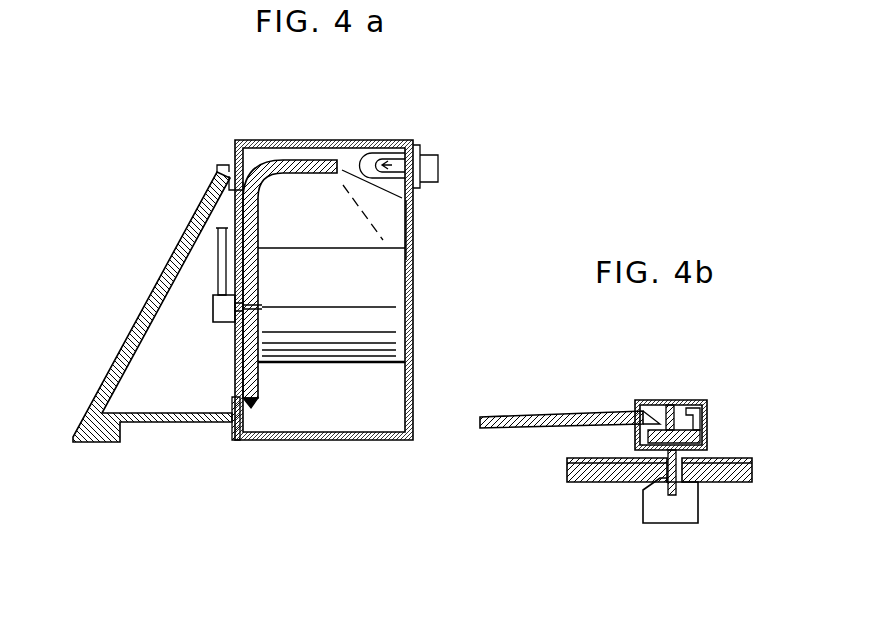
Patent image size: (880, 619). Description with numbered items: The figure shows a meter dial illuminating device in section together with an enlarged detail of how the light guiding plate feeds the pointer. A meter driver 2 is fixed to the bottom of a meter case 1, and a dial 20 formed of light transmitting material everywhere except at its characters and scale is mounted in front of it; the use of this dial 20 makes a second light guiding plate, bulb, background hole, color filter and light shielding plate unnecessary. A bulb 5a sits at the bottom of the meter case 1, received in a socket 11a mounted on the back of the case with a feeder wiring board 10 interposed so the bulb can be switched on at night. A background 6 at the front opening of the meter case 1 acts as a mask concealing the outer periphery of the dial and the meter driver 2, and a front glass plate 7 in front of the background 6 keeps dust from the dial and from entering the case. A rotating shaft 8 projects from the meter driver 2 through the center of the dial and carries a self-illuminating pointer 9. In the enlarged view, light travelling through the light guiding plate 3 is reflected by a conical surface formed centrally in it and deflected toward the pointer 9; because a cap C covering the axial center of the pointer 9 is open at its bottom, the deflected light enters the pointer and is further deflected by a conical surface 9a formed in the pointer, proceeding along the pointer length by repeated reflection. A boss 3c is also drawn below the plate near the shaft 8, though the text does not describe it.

In FIG. 4a, the meter case 1 is at (336, 141).
In FIG. 4a, the meter driver 2 is at (372, 324).
In FIG. 4a, the light guiding plate 3 is at (285, 162).
In FIG. 4b, the light guiding plate 3 is at (722, 481).
In FIG. 4b, the boss 3c is at (690, 488).
In FIG. 4a, the bulb 5a is at (382, 153).
In FIG. 4a, the background 6 is at (236, 162).
In FIG. 4a, the front glass plate 7 is at (200, 222).
In FIG. 4a, the rotating shaft 8 is at (262, 308).
In FIG. 4b, the rotating shaft 8 is at (666, 483).
In FIG. 4a, the pointer 9 is at (218, 272).
In FIG. 4b, the pointer 9 is at (562, 412).
In FIG. 4b, the conical surface 9a is at (632, 408).
In FIG. 4a, the feeder wiring board 10 is at (413, 224).
In FIG. 4a, the socket 11a is at (438, 163).
In FIG. 4a, the dial 20 is at (252, 407).
In FIG. 4b, the dial 20 is at (730, 458).
In FIG. 4a, the cap C is at (213, 308).
In FIG. 4b, the cap C is at (668, 400).